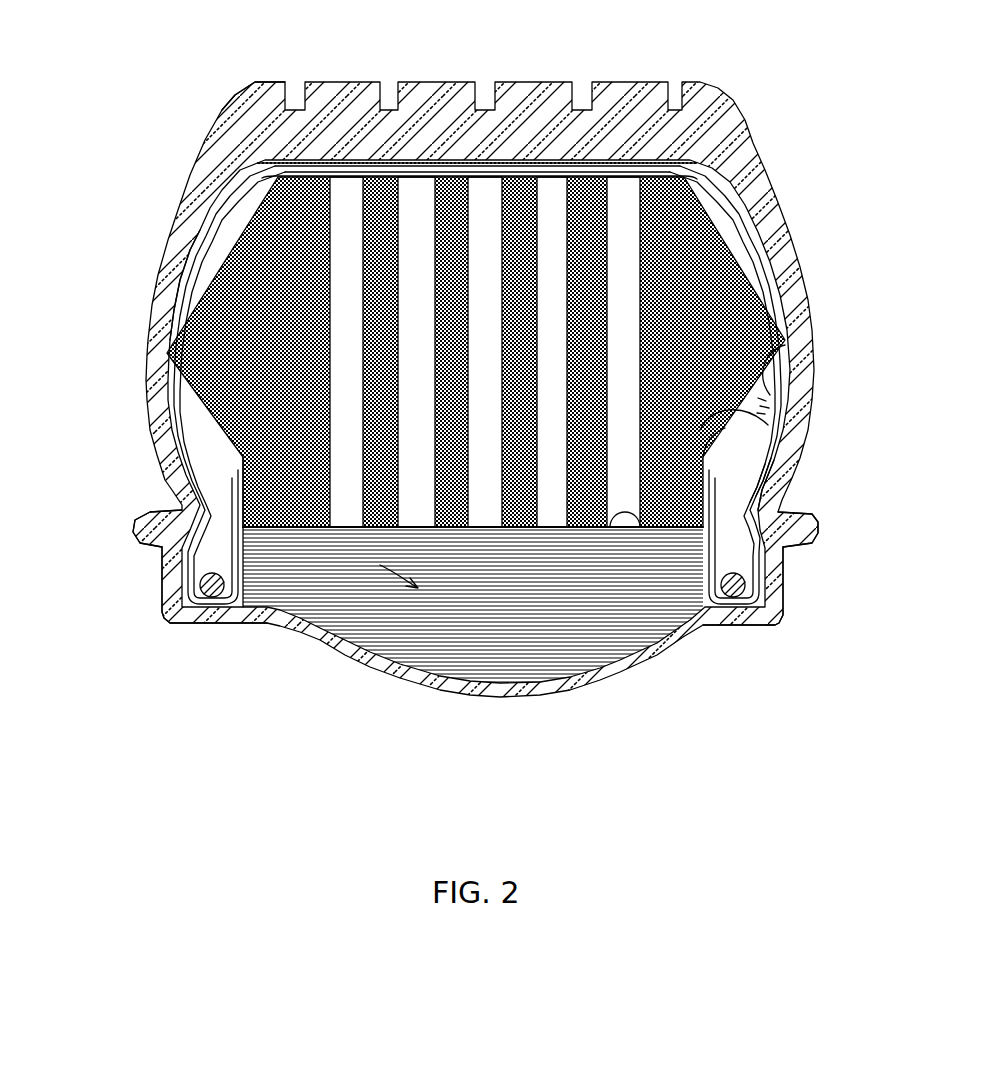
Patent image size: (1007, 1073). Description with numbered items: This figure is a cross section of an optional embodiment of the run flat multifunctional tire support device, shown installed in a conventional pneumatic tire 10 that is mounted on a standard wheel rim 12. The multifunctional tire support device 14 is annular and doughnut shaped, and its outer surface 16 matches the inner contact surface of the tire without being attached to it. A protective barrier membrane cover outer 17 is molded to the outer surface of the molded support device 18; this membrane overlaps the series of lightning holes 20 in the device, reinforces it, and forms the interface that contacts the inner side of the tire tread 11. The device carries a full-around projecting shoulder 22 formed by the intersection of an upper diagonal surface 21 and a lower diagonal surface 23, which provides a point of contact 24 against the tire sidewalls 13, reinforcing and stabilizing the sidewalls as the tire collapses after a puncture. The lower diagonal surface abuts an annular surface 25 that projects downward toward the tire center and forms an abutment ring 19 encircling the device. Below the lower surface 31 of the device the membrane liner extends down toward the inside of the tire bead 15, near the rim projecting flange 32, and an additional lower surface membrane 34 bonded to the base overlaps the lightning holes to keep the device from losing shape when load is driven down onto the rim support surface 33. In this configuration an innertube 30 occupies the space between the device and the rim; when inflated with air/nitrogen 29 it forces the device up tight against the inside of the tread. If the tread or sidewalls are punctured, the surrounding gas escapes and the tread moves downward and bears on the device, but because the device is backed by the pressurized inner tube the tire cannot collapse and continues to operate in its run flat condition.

The tire 10 is at (258, 84).
The tire tread 11 is at (596, 82).
The rim 12 is at (690, 626).
The tire sidewalls 13 is at (792, 278).
The multifunctional tire support device 14 is at (195, 200).
The tire bead 15 is at (730, 625).
The outer surface 16 is at (307, 180).
The membrane cover outer 17 is at (447, 172).
The molded support device 18 is at (225, 140).
The abutment ring 19 is at (783, 433).
The lightning holes 20 is at (477, 190).
The upper diagonal surface 21 is at (720, 233).
The projecting shoulder 22 is at (215, 250).
The lower diagonal surface 23 is at (770, 462).
The point of contact 24 is at (768, 398).
The annular surface 25 is at (243, 473).
The air/nitrogen 29 is at (774, 432).
The innertube 30 is at (450, 662).
The lower surface 31 is at (615, 528).
The rim projecting flange 32 is at (128, 520).
The rim support surface 33 is at (236, 620).
The lower surface membrane 34 is at (340, 527).